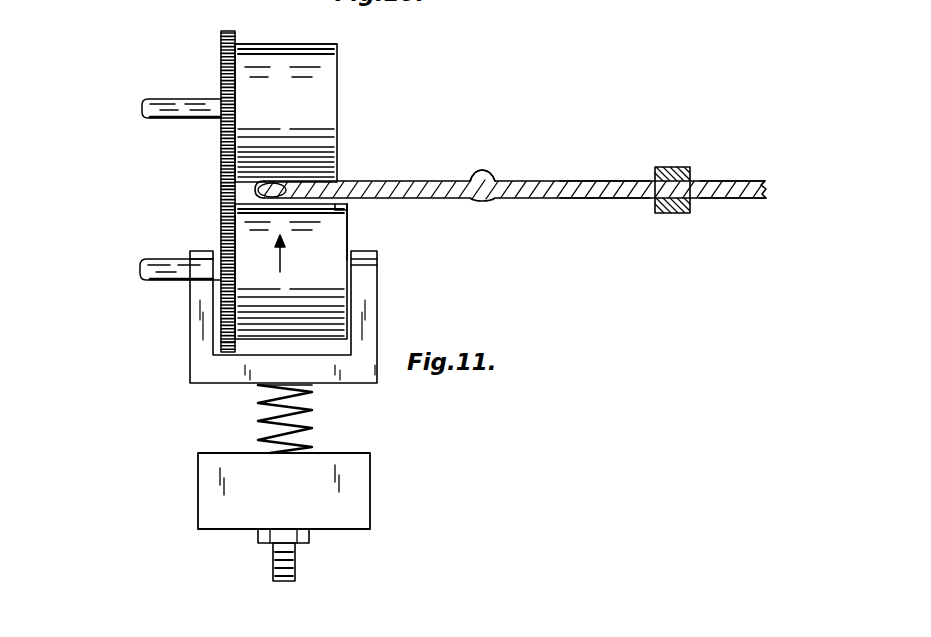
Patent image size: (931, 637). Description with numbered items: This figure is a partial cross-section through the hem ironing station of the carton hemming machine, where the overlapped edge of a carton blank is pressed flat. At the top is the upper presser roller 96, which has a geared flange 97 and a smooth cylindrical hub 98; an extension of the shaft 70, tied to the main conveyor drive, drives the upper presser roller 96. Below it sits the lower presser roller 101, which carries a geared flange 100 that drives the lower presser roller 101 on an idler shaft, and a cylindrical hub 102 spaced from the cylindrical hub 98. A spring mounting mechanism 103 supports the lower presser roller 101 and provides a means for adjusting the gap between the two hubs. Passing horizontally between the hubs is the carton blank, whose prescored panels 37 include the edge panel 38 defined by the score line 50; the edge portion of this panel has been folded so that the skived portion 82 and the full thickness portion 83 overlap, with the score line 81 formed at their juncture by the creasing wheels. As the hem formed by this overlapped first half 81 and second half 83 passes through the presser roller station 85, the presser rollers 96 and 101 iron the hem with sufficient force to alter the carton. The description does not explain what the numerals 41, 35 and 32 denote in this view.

The geared flange 97 is at (220, 31).
The shaft 70 is at (153, 98).
The cylindrical hub 98 is at (325, 92).
The upper presser roller 96 is at (337, 80).
The edge panel 38 is at (455, 180).
The full thickness portion 83 is at (343, 178).
The score line 50 is at (487, 170).
The panels 37 is at (620, 180).
The stop collar 35 is at (672, 167).
The rod end 32 is at (765, 182).
The presser roller station 85 is at (728, 223).
The cylindrical hub 102 is at (317, 272).
The skived portion 82 is at (345, 217).
The lower presser roller 101 is at (350, 247).
The geared flange 100 is at (225, 345).
The score line 81 is at (221, 188).
The actuator assembly 41 is at (140, 226).
The spring mounting mechanism 103 is at (316, 418).